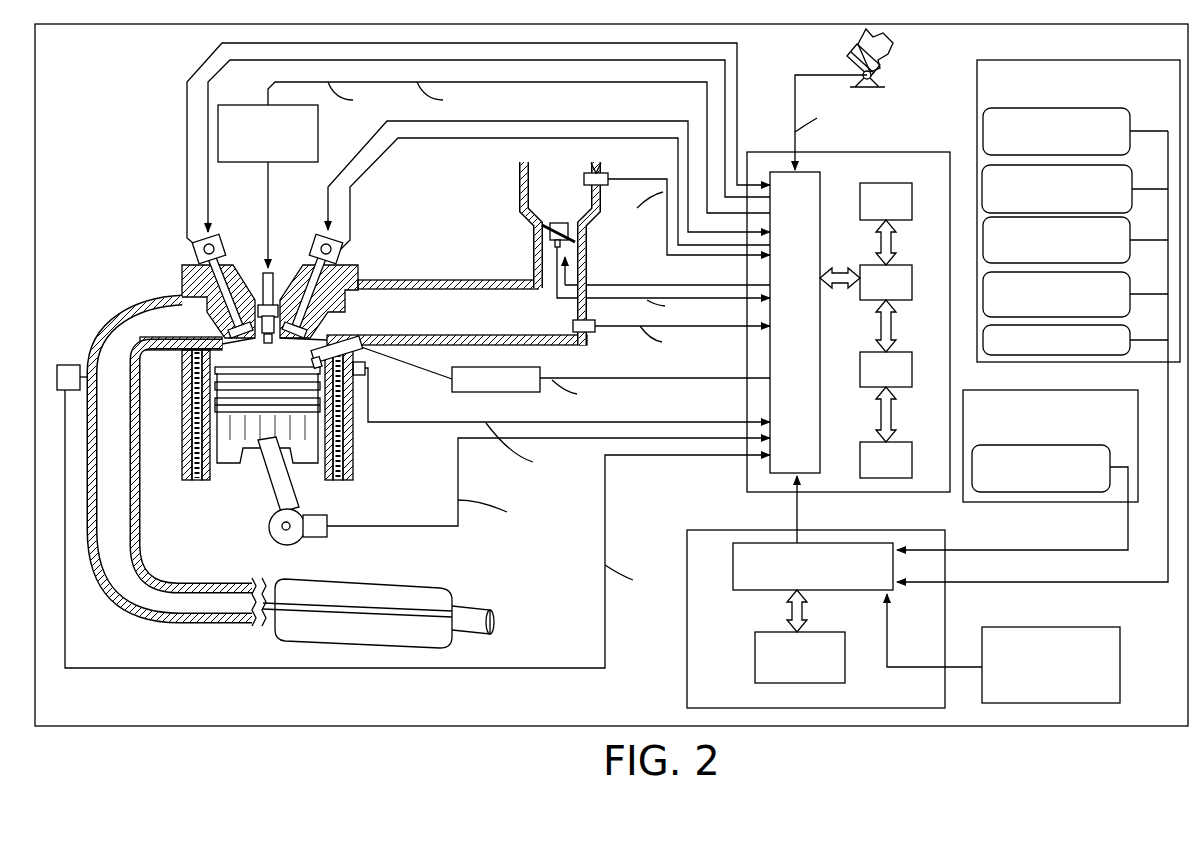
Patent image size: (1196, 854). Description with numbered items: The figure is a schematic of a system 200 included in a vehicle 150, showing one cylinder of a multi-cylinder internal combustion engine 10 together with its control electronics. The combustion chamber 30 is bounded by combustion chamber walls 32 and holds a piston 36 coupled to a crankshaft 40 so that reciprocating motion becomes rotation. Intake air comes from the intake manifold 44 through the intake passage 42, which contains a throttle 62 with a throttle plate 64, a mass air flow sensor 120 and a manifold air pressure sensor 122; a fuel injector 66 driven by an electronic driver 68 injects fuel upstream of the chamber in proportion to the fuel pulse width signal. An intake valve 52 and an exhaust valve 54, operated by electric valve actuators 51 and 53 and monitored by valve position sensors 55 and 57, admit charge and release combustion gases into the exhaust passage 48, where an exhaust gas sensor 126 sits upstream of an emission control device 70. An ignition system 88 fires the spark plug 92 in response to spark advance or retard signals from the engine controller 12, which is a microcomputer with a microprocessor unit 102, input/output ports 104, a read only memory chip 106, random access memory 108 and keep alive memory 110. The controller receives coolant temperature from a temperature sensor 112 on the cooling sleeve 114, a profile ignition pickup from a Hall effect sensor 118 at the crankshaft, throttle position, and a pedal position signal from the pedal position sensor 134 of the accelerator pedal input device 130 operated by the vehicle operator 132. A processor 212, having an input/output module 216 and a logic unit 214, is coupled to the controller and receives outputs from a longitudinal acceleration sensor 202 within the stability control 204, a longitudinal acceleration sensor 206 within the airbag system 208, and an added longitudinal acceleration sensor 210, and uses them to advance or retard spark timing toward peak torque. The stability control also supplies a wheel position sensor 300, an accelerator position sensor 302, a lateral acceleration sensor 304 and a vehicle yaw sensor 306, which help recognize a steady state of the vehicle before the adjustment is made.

The internal combustion engine 10 is at (124, 226).
The engine controller 12 is at (907, 152).
The combustion chamber 30 is at (265, 352).
The combustion chamber walls 32 is at (220, 472).
The piston 36 is at (252, 437).
The crankshaft 40 is at (280, 545).
The intake passage 42 is at (571, 203).
The intake manifold 44 is at (515, 322).
The exhaust passage 48 is at (165, 329).
The electric valve actuator 51 is at (317, 240).
The intake valve 52 is at (303, 320).
The electric valve actuator 53 is at (220, 240).
The exhaust valve 54 is at (230, 327).
The valve position sensor 55 is at (337, 257).
The valve position sensor 57 is at (198, 257).
The throttle 62 is at (586, 229).
The throttle plate 64 is at (541, 227).
The fuel injector 66 is at (348, 354).
The electronic driver 68 is at (478, 393).
The emission control device 70 is at (422, 586).
The ignition system 88 is at (230, 105).
The spark plug 92 is at (272, 275).
The microprocessor unit 102 is at (902, 265).
The input/output ports 104 is at (823, 178).
The read only memory chip 106 is at (897, 183).
The random access memory 108 is at (900, 352).
The keep alive memory 110 is at (897, 442).
The temperature sensor 112 is at (365, 372).
The cooling sleeve 114 is at (338, 440).
The Hall effect sensor 118 is at (317, 538).
The mass air flow sensor 120 is at (603, 173).
The manifold air pressure sensor 122 is at (592, 333).
The exhaust gas sensor 126 is at (68, 364).
The input device 130 is at (848, 57).
The vehicle operator 132 is at (893, 43).
The pedal position sensor 134 is at (880, 74).
The vehicle 150 is at (418, 719).
The system 200 is at (140, 67).
The longitudinal acceleration sensor 202 is at (1110, 108).
The stability control 204 is at (1083, 58).
The longitudinal acceleration sensor 206 is at (1085, 446).
The airbag system 208 is at (1095, 389).
The longitudinal acceleration sensor 210 is at (1080, 627).
The processor 212 is at (890, 529).
The logic unit 214 is at (823, 631).
The input/output module 216 is at (762, 593).
The wheel position sensor 300 is at (1120, 165).
The accelerator position sensor 302 is at (1120, 218).
The lateral acceleration sensor 304 is at (1120, 273).
The vehicle yaw sensor 306 is at (1120, 326).